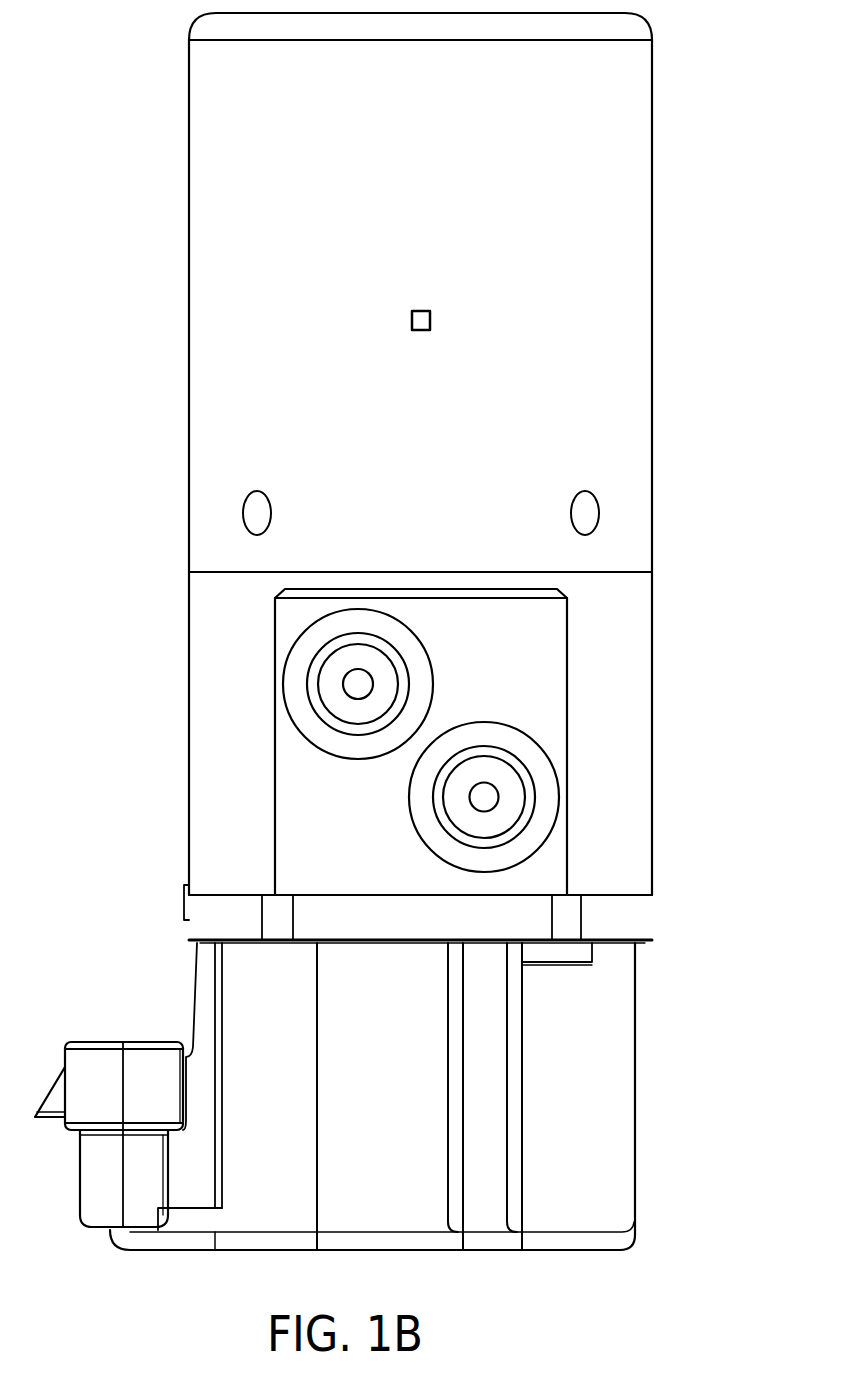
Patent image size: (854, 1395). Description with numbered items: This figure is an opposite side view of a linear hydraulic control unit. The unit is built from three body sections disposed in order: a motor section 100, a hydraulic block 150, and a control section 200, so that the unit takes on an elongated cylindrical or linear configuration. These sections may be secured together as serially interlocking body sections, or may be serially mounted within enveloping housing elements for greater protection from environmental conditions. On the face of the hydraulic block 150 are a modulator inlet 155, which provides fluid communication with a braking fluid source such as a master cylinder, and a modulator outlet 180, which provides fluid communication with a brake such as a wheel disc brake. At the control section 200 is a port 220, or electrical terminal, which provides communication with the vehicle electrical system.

The motor section 100 is at (646, 208).
The hydraulic block 150 is at (642, 700).
The modulator inlet 155 is at (291, 683).
The modulator outlet 180 is at (419, 810).
The control section 200 is at (627, 1083).
The port 220 is at (106, 1040).